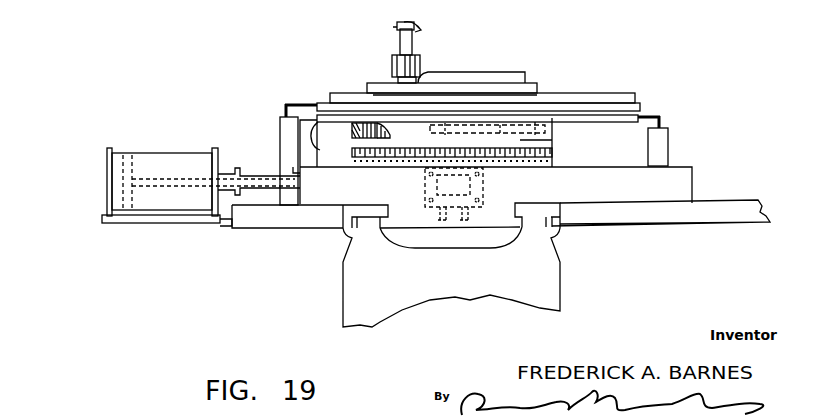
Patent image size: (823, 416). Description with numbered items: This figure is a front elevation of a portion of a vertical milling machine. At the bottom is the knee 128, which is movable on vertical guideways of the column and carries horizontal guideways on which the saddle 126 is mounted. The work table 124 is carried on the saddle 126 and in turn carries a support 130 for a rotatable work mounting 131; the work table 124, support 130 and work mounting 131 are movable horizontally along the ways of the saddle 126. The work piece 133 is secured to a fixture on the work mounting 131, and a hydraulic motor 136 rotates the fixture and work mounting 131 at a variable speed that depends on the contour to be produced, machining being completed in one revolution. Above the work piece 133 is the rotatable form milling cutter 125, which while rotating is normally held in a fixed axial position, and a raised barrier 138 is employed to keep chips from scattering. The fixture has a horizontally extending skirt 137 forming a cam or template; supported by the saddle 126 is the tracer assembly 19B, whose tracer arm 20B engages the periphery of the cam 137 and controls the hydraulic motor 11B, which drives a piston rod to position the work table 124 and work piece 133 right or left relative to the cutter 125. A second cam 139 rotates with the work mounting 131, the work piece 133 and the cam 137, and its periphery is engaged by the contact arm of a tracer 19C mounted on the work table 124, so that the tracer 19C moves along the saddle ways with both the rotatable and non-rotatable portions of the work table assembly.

The hydraulic motor 11B is at (140, 152).
The tracer assembly 19B is at (280, 128).
The tracer arm 20B is at (304, 104).
The form milling cutter 125 is at (420, 64).
The work piece 133 is at (524, 72).
The raised barrier 138 is at (630, 93).
The skirt 137 is at (641, 105).
The second cam 139 is at (350, 141).
The work mounting 131 is at (552, 128).
The support 130 is at (553, 151).
The tracer 19C is at (668, 144).
The hydraulic motor 136 is at (483, 196).
The work table 124 is at (492, 185).
The saddle 126 is at (655, 228).
The knee 128 is at (451, 265).